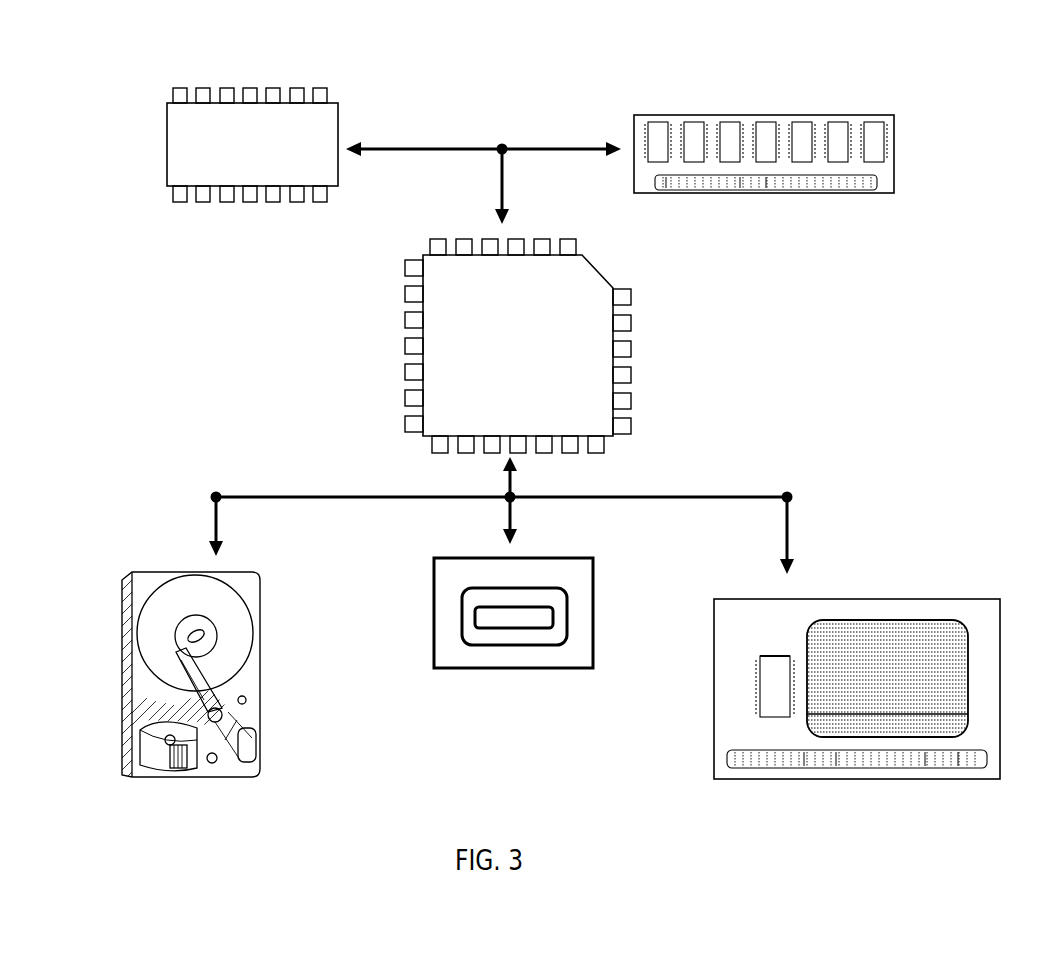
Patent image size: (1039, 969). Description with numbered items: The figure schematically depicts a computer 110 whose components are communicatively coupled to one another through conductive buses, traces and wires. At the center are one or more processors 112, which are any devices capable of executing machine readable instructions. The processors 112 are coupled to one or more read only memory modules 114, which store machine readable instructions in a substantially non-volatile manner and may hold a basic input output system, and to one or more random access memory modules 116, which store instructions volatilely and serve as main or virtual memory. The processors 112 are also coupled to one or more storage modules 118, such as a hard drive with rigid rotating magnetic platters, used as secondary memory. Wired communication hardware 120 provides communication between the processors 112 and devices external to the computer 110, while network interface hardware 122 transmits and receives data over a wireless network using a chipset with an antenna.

The computer 110 is at (152, 74).
The processors 112 is at (424, 258).
The read only memory modules 114 is at (320, 93).
The random access memory modules 116 is at (746, 121).
The storage modules 118 is at (148, 576).
The wired communication hardware 120 is at (446, 559).
The network interface hardware 122 is at (925, 608).